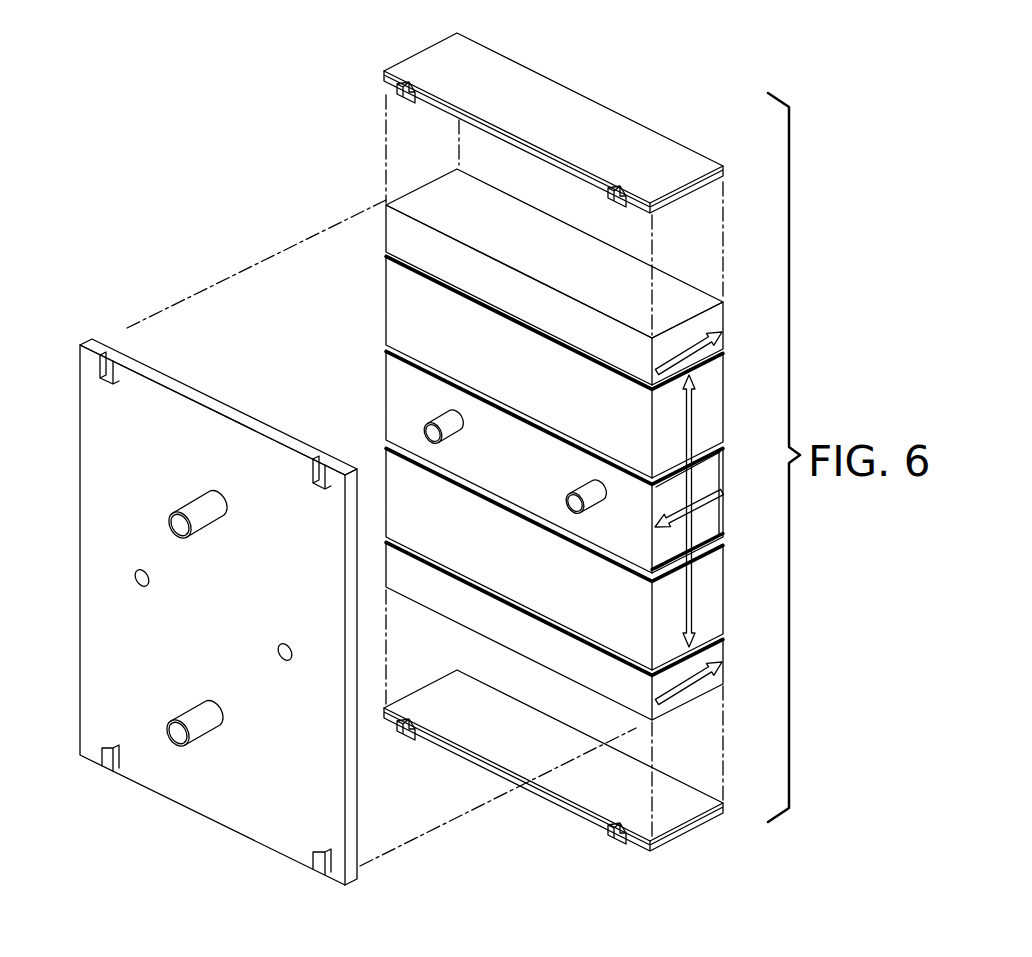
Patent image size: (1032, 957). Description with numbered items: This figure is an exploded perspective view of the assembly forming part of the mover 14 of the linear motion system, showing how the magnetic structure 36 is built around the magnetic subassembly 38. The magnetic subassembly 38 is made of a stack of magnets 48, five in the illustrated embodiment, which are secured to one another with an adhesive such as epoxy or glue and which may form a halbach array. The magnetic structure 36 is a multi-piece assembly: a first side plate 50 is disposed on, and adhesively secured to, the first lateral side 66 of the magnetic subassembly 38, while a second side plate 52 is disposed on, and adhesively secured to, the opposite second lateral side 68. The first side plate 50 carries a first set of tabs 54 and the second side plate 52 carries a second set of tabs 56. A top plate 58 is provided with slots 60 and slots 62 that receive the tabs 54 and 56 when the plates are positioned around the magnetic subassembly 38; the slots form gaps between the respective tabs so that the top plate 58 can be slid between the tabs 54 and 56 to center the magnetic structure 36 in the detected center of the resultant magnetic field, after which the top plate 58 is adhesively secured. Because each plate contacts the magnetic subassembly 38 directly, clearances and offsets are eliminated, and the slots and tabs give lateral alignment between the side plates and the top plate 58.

The mover 14 is at (226, 60).
The magnetic structure 36 is at (64, 504).
The magnetic subassembly 38 is at (748, 506).
The magnets 48 is at (727, 398).
The first side plate 50 is at (553, 108).
The second side plate 52 is at (545, 797).
The first set of tabs 54 is at (408, 86).
The second set of tabs 56 is at (398, 732).
The top plate 58 is at (100, 628).
The first set of lateral slots 60 is at (104, 356).
The slots 62 is at (110, 770).
The first lateral side 66 is at (452, 207).
The second lateral side 68 is at (680, 706).